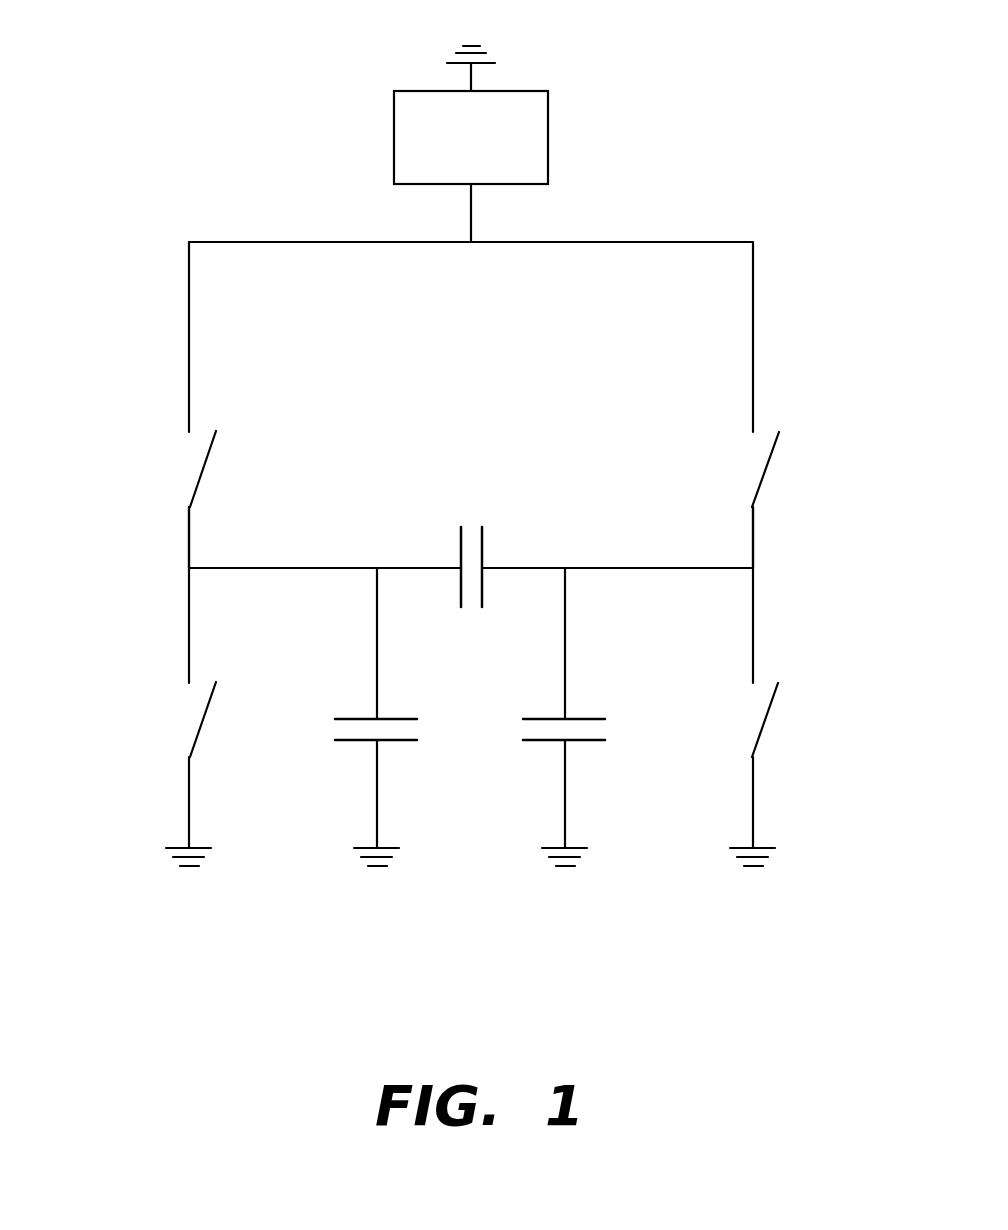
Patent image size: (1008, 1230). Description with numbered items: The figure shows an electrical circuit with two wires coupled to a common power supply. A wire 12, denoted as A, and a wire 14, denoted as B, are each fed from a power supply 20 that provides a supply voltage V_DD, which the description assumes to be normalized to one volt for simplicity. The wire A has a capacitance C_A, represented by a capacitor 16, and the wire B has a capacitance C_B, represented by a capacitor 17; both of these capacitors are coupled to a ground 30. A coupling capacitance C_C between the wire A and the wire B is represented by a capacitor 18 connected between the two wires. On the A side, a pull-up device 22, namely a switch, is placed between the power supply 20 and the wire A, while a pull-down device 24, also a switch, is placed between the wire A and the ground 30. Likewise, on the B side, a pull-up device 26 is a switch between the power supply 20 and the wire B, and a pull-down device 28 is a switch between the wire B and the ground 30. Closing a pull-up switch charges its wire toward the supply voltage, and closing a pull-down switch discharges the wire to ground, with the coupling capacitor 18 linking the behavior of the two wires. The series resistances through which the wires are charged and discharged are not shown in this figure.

The wire 12 is at (190, 528).
The wire 14 is at (753, 520).
The capacitor 16 is at (360, 718).
The capacitor 17 is at (547, 718).
The capacitor 18 is at (483, 548).
The power supply 20 is at (548, 140).
The pull-up device 22 is at (207, 452).
The pull-down device 24 is at (205, 708).
The pull-up device 26 is at (773, 458).
The pull-down device 28 is at (770, 710).
The ground 30 is at (487, 51).